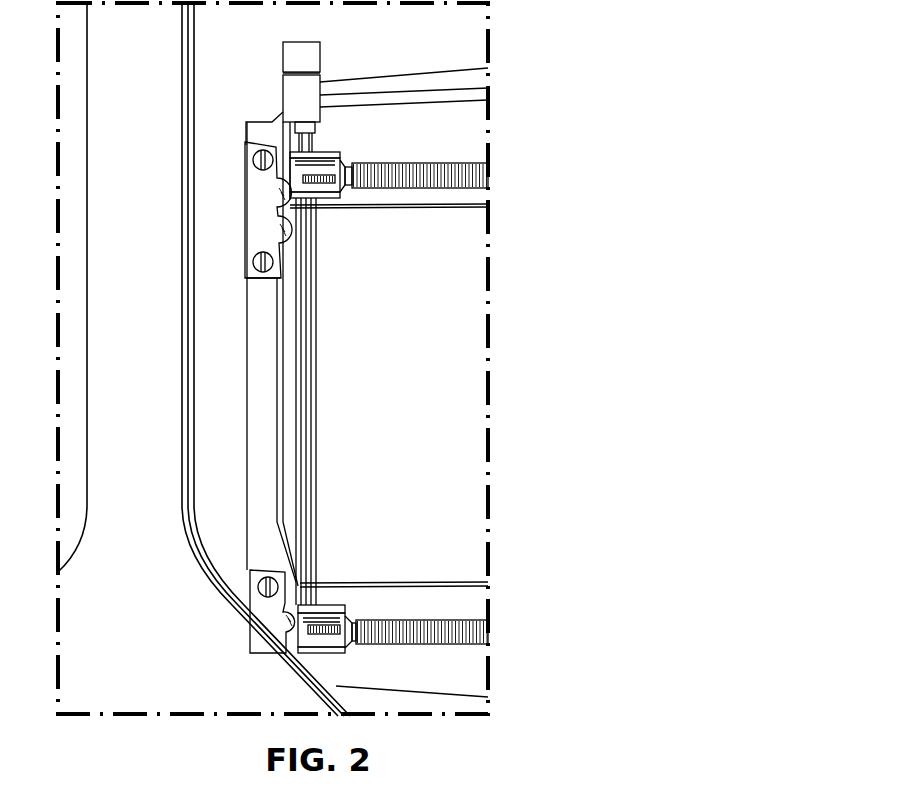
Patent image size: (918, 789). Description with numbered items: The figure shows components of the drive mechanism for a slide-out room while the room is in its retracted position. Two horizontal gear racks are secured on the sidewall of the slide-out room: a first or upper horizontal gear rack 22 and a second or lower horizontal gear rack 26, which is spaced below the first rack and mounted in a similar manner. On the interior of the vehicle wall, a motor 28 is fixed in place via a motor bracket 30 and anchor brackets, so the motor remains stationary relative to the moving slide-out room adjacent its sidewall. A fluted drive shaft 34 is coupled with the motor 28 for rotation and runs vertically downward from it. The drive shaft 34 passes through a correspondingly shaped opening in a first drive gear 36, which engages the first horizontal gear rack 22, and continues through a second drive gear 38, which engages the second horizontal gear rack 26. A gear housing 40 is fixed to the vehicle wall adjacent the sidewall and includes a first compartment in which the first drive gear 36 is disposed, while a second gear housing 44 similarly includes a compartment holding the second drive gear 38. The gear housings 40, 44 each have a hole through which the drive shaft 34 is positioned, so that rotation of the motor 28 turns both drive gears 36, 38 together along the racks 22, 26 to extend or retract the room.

The first horizontal gear rack 22 is at (410, 182).
The second horizontal gear rack 26 is at (385, 635).
The motor 28 is at (303, 62).
The motor bracket 30 is at (256, 405).
The drive shaft 34 is at (307, 335).
The first drive gear 36 is at (316, 179).
The second drive gear 38 is at (323, 629).
The gear housing 40 is at (358, 150).
The second gear housing 44 is at (362, 658).